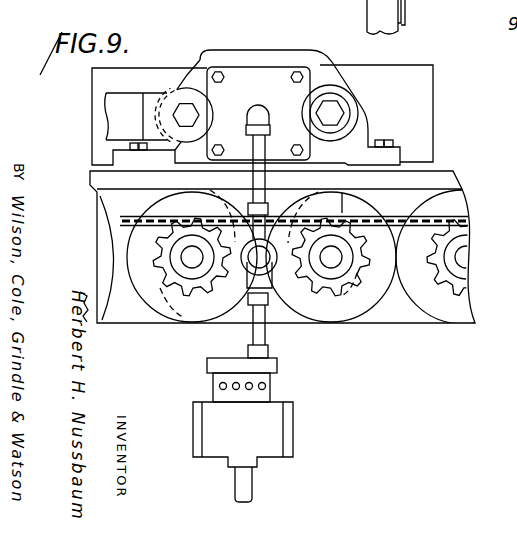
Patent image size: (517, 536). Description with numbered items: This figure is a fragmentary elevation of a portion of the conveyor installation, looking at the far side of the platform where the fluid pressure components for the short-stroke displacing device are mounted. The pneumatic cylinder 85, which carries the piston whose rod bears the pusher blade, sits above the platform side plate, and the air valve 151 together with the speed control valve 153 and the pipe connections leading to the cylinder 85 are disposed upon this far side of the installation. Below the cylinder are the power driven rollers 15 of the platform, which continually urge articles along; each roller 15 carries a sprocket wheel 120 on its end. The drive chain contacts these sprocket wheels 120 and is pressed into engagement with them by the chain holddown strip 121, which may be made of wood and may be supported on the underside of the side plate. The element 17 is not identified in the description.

The pneumatic cylinder 85 is at (255, 77).
The chain holddown strip 121 is at (318, 203).
The speed control valve 153 is at (218, 240).
The body 17 is at (277, 247).
The power driven rollers 15 is at (329, 269).
The sprocket wheels 120 is at (160, 273).
The air valve 151 is at (272, 428).